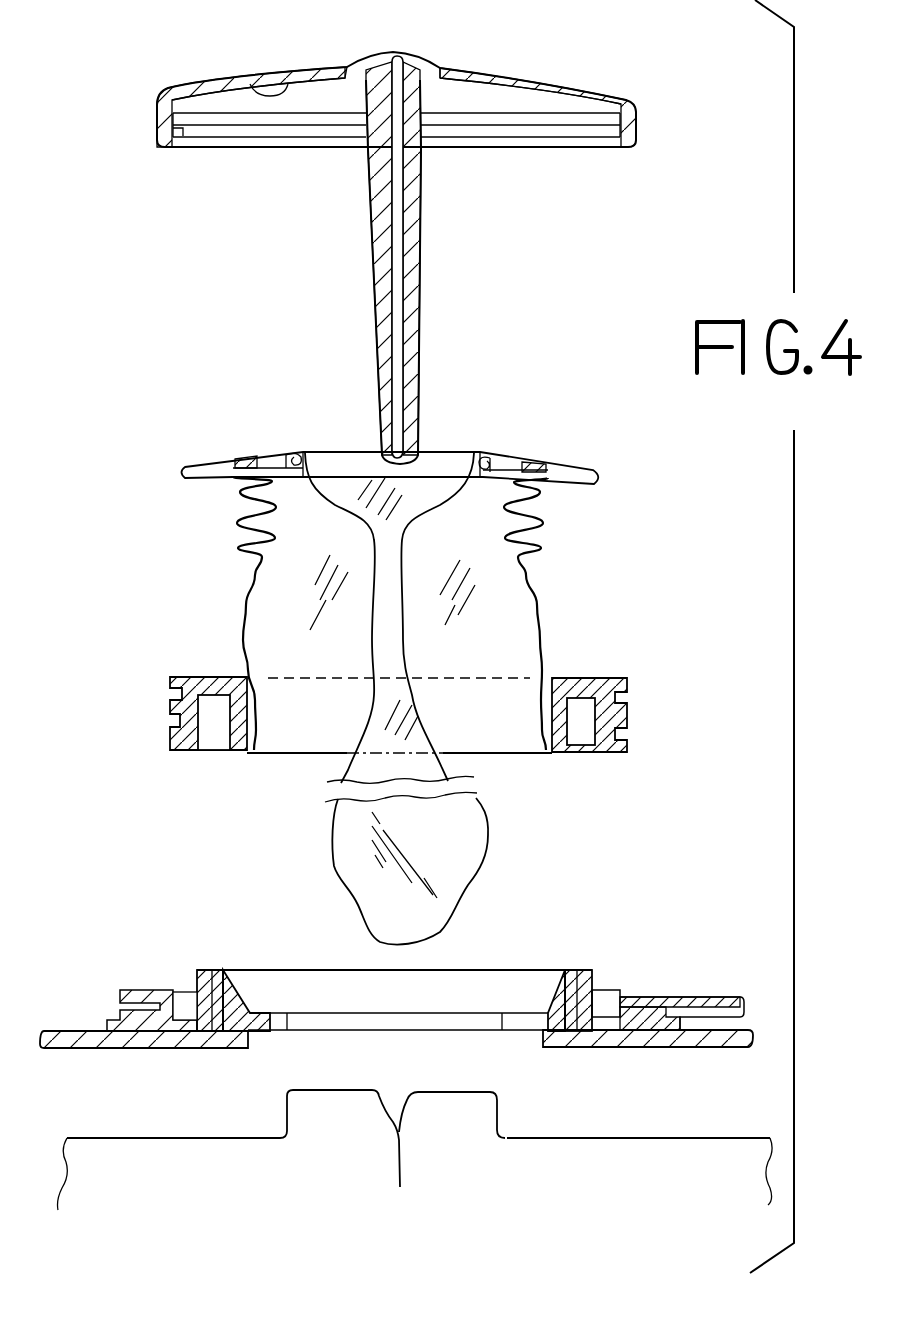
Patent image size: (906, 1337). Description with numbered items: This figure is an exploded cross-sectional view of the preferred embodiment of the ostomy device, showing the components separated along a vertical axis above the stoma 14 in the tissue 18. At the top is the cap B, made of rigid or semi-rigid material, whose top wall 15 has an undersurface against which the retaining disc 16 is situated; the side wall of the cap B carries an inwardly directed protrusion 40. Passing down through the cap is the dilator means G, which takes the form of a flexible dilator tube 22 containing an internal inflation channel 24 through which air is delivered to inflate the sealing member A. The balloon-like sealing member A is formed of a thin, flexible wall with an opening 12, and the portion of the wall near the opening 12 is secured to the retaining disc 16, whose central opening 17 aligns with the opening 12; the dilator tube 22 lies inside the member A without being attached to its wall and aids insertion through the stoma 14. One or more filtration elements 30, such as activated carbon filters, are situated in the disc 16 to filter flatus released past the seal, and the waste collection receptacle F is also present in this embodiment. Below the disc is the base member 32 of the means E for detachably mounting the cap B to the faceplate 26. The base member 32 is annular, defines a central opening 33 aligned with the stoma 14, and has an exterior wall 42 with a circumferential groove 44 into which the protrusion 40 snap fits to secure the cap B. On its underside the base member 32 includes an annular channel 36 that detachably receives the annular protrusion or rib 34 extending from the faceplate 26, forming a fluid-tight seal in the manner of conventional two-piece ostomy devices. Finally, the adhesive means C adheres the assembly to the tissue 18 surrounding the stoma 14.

The cap B is at (592, 93).
The top wall 15 is at (300, 76).
The inwardly directed protrusion 40 is at (244, 128).
The dilator means G is at (423, 253).
The flexible dilator tube 22 is at (370, 262).
The internal inflation channel 24 is at (400, 330).
The retaining disc 16 is at (185, 477).
The filtration elements 30 is at (240, 462).
The central opening 17 is at (277, 465).
The opening 12 is at (435, 468).
The sealing member A is at (486, 864).
The waste collection receptacle F is at (242, 597).
The means for detachably mounting cap to faceplate E is at (562, 556).
The central opening 33 is at (246, 680).
The annular channel 36 is at (218, 732).
The base member 32 is at (588, 682).
The circumferential groove 44 is at (630, 700).
The exterior wall 42 is at (632, 733).
The adhesive means C is at (768, 1027).
The annular protrusion or rib 34 is at (203, 995).
The faceplate 26 is at (118, 1020).
The tissue 18 is at (657, 1168).
The stoma 14 is at (465, 1118).